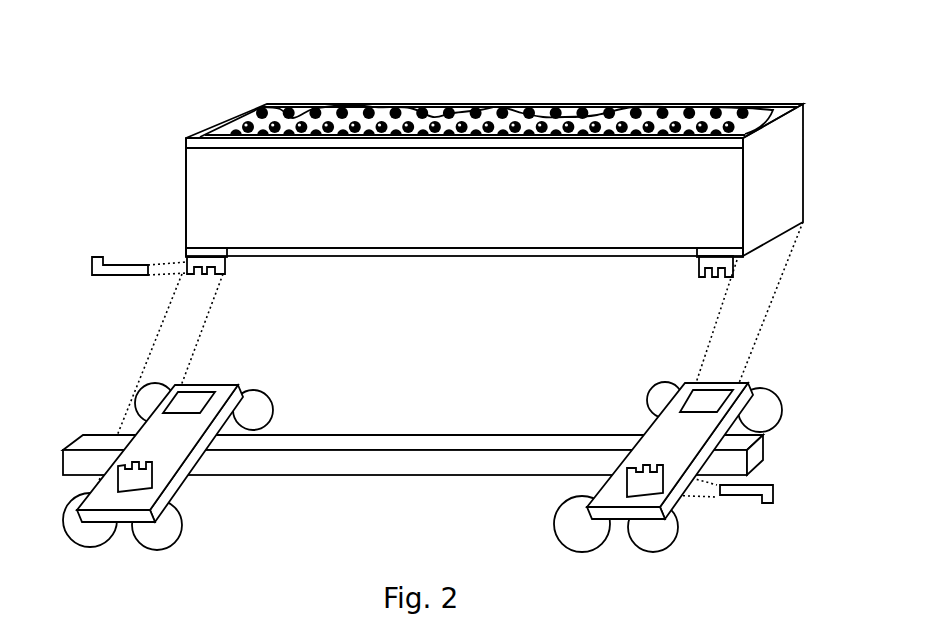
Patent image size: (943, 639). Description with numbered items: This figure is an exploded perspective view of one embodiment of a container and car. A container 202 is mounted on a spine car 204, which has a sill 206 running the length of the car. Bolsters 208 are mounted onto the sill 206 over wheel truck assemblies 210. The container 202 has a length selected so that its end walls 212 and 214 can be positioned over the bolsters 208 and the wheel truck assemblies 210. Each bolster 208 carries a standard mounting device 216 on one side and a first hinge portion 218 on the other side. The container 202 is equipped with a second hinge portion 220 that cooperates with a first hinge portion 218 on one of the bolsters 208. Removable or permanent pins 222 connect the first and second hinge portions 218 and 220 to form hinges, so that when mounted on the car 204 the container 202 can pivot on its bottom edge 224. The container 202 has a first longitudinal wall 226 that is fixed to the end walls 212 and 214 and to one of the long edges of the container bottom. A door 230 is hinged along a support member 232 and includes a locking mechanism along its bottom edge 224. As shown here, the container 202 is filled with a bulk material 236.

The container 202 is at (447, 196).
The spine car 204 is at (420, 487).
The sill 206 is at (343, 468).
The bolster 208 is at (170, 458).
The wheel truck assembly 210 is at (155, 537).
The end wall 212 is at (183, 217).
The end wall 214 is at (783, 145).
The standard mounting device 216 is at (198, 402).
The first hinge portion 218 is at (128, 487).
The second hinge portion 220 is at (178, 278).
The pin 222 is at (91, 269).
The bottom edge 224 is at (342, 254).
The first longitudinal wall 226 is at (445, 112).
The door 230 is at (463, 176).
The support member 232 is at (188, 139).
The bulk material 236 is at (537, 125).